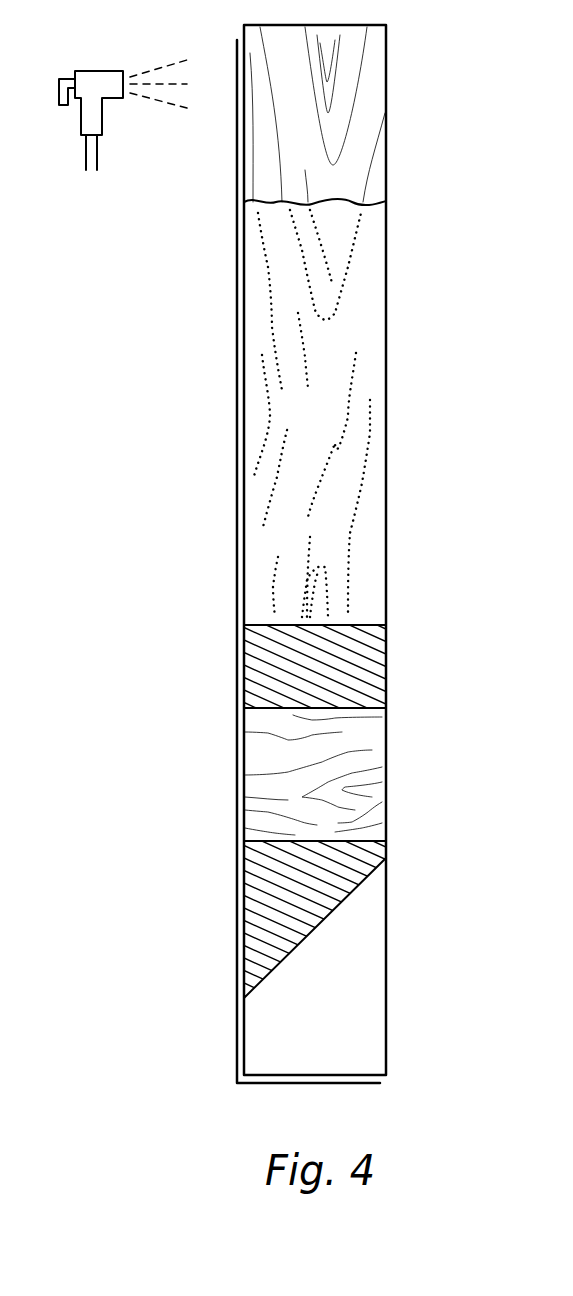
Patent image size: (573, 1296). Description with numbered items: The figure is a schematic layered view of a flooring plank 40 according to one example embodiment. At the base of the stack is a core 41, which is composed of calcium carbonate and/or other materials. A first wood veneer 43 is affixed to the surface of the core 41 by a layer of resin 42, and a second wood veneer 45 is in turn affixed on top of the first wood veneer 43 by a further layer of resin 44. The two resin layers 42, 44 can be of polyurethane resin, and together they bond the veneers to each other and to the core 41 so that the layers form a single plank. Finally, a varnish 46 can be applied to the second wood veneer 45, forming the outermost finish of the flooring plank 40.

The flooring plank 40 is at (196, 378).
The core 41 is at (352, 984).
The layer of resin 42 is at (270, 900).
The first wood veneer 43 is at (352, 763).
The layer of resin 44 is at (270, 664).
The second wood veneer 45 is at (352, 427).
The varnish 46 is at (352, 89).